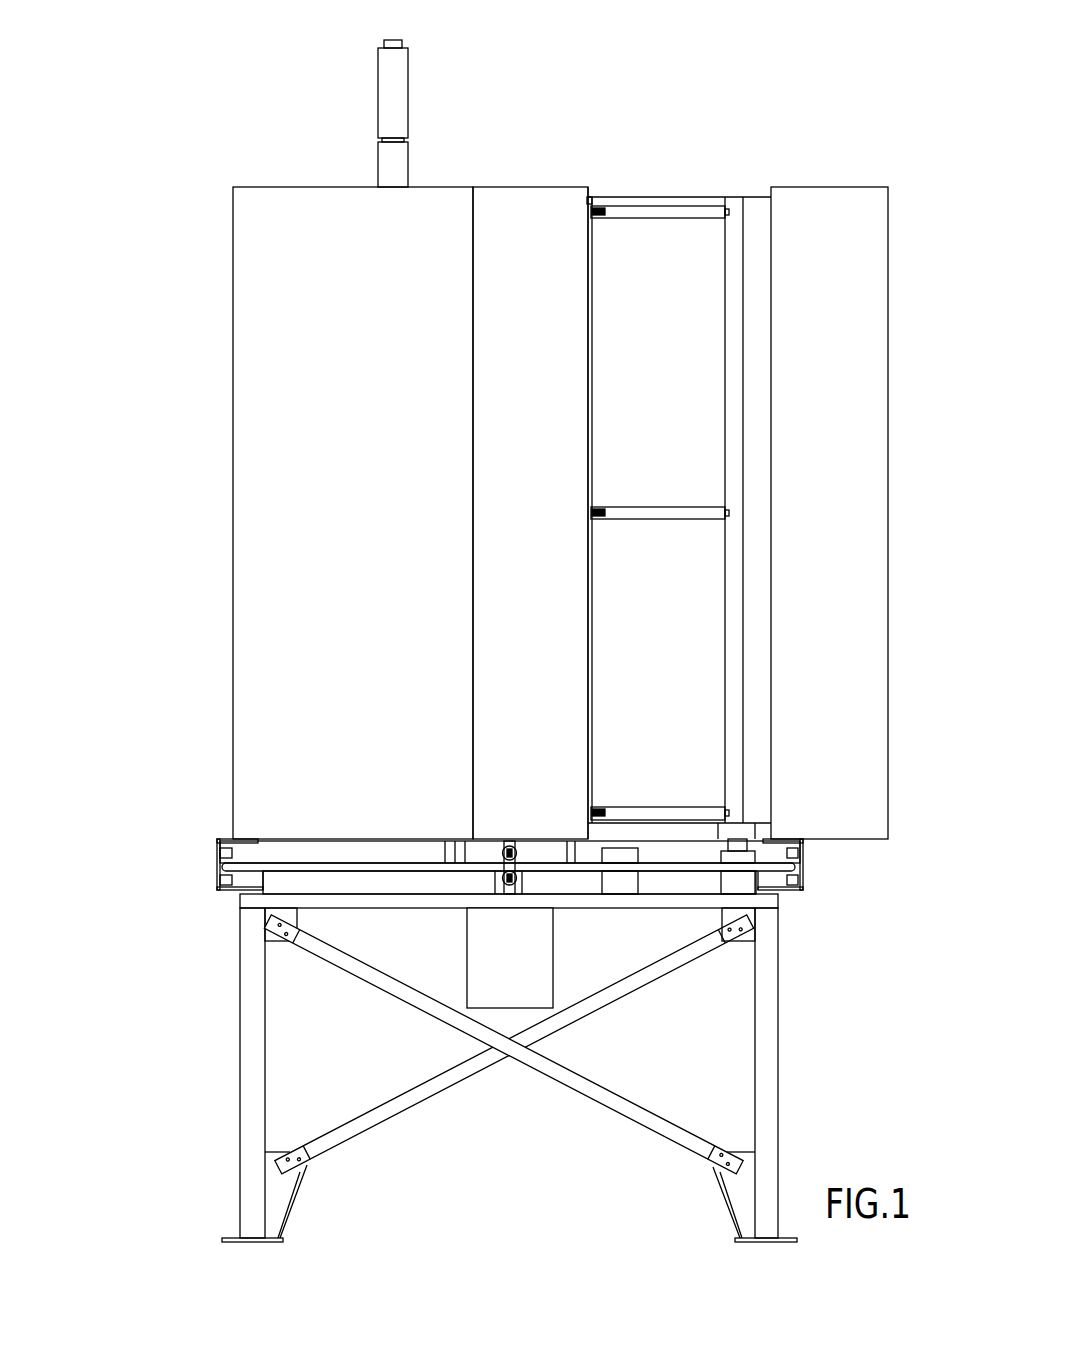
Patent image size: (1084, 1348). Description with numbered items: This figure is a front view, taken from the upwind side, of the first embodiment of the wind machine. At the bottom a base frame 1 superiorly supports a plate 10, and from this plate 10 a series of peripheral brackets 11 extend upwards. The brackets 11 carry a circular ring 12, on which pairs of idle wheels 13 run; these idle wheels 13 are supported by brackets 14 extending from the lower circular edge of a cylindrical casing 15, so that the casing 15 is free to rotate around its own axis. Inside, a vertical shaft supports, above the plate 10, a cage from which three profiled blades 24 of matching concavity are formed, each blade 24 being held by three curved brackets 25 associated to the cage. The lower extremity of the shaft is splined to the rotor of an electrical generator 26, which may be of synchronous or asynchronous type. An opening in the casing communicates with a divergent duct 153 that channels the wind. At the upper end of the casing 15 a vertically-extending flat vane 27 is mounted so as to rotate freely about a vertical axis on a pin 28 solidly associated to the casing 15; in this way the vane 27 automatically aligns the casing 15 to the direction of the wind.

The base frame 1 is at (253, 1081).
The plate 10 is at (252, 902).
The peripheral brackets 11 is at (247, 885).
The circular ring 12 is at (365, 867).
The idle wheels 13 is at (220, 855).
The brackets 14 is at (227, 840).
The cylindrical casing 15 is at (360, 524).
The divergent duct 153 is at (550, 560).
The profiled blades 24 is at (672, 388).
The curved brackets 25 is at (665, 220).
The electrical generator 26 is at (528, 971).
The flat vane 27 is at (400, 92).
The pin 28 is at (389, 41).